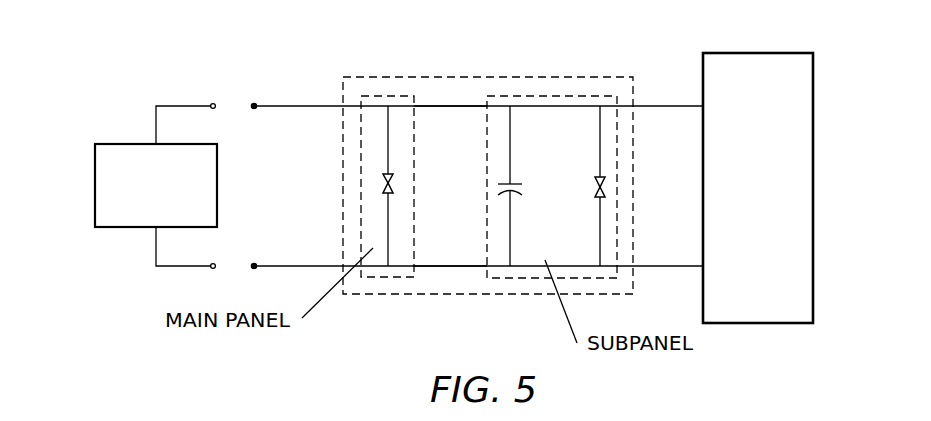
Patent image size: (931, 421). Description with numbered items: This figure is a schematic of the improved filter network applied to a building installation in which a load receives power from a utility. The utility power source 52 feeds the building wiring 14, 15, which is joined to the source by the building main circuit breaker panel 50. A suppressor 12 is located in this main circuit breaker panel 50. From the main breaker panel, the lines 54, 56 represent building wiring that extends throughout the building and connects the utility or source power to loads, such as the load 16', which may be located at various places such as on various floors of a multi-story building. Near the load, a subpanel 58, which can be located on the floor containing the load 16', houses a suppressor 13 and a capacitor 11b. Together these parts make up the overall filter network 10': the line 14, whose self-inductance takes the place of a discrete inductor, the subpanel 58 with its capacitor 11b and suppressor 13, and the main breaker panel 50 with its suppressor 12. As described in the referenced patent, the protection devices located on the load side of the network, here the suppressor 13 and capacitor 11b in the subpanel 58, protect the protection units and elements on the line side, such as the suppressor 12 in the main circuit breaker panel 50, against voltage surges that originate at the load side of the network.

The overall filter network 10' is at (488, 154).
The capacitor 11b is at (515, 183).
The suppressor 12 is at (393, 185).
The suppressor 13 is at (596, 188).
The building wiring 14 is at (288, 105).
The building wiring 15 is at (288, 265).
The load 16' is at (796, 188).
The main circuit breaker panel 50 is at (387, 93).
The utility power source 52 is at (107, 143).
The line 54 is at (434, 106).
The line 56 is at (450, 267).
The subpanel 58 is at (557, 96).